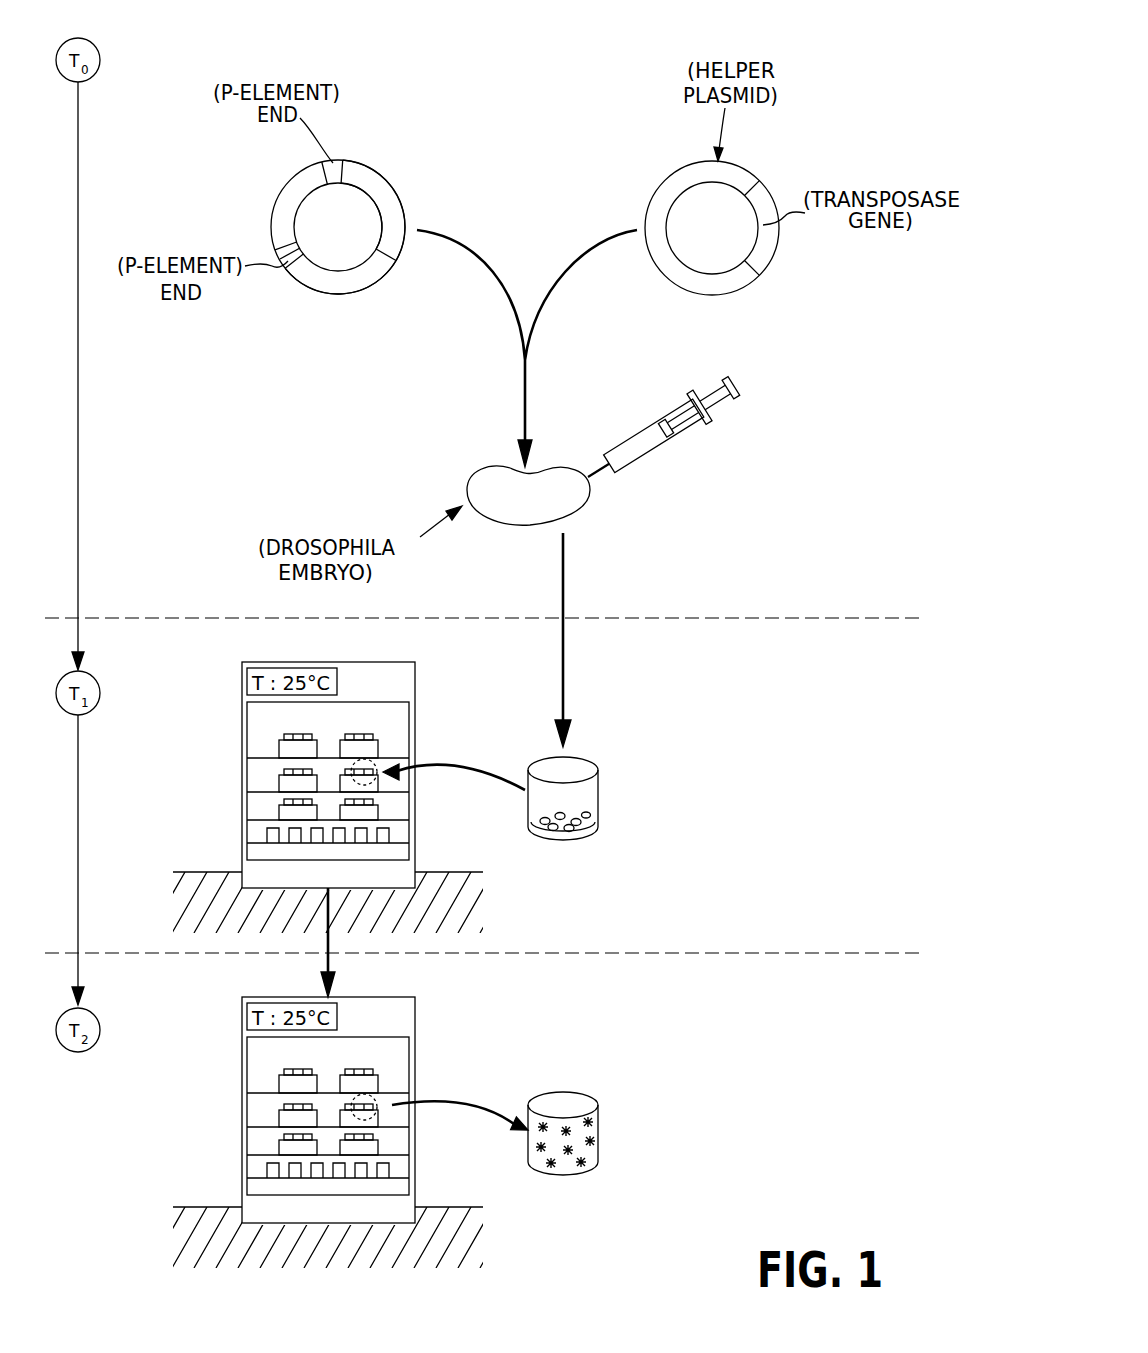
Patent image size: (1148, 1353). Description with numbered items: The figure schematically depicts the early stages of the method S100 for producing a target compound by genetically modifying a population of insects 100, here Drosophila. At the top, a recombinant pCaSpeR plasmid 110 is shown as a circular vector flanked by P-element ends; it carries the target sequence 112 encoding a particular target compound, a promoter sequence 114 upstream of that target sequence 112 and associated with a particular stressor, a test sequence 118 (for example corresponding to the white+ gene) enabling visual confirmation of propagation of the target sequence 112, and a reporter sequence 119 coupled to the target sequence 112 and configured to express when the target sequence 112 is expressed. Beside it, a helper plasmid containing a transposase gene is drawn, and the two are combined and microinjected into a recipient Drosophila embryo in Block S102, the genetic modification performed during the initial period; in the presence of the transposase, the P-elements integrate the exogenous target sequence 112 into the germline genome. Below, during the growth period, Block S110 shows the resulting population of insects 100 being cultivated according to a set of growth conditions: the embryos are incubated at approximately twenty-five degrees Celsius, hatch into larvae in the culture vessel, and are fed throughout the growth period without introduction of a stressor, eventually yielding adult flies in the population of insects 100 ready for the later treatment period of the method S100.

The plasmid 110 is at (360, 158).
The target sequence 112 is at (347, 283).
The promoter sequence 114 is at (293, 274).
The test sequence 118 is at (424, 209).
The reporter sequence 119 is at (388, 208).
The population of insects 100 is at (610, 814).
The method S100 is at (822, 72).
The genetically modifying step S102 is at (513, 481).
The cultivating step S110 is at (386, 935).